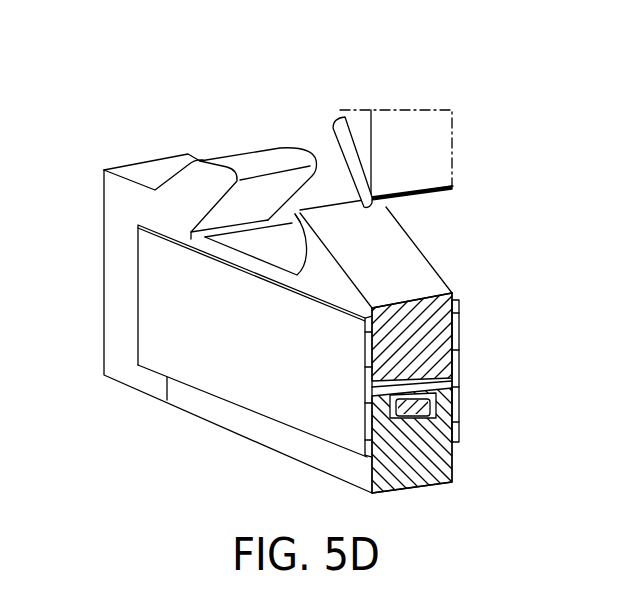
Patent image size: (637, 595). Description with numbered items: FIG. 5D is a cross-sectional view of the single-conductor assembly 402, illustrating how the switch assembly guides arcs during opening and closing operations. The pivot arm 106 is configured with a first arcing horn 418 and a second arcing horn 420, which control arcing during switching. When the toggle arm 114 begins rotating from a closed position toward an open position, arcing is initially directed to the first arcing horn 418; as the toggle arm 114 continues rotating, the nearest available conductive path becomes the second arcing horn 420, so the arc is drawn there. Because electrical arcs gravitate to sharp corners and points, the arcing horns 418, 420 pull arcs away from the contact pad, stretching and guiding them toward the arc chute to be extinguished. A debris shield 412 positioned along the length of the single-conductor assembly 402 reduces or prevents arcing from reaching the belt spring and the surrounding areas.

The single-conductor assembly 402 is at (151, 94).
The second arcing horn 420 is at (238, 162).
The first arcing horn 418 is at (294, 212).
The toggle arm 114 is at (337, 117).
The pivot arm 106 is at (223, 252).
The debris shield 412 is at (457, 395).